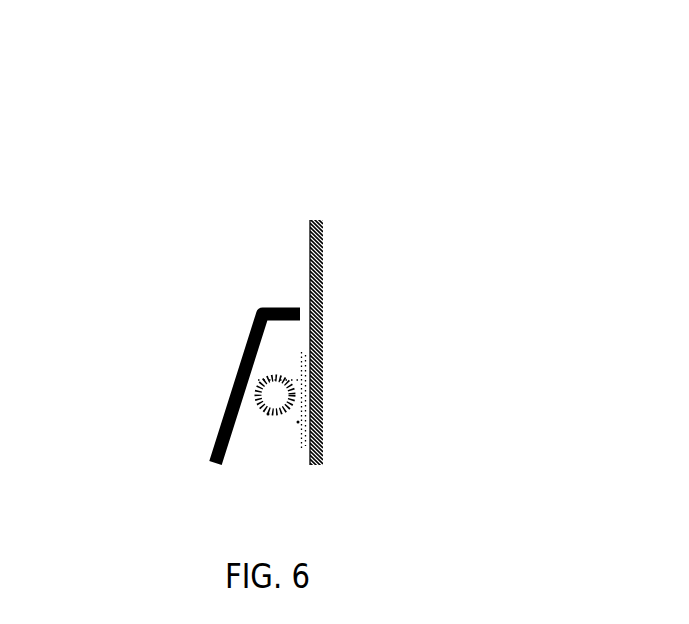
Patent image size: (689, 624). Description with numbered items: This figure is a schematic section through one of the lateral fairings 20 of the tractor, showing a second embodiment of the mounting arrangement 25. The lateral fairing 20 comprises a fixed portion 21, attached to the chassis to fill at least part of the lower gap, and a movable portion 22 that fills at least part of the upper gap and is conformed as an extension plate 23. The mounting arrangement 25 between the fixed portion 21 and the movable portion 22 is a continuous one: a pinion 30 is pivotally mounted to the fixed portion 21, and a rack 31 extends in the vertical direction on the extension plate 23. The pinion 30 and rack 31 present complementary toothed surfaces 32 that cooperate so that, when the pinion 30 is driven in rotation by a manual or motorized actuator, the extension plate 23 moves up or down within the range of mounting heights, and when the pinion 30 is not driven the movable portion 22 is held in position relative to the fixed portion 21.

The lateral fairing 20 is at (226, 248).
The fixed portion 21 is at (205, 414).
The movable portion 22 is at (329, 333).
The extension plate 23 is at (312, 237).
The mounting arrangement 25 is at (177, 287).
The pinion 30 is at (244, 386).
The rack 31 is at (291, 451).
The complementary toothed surfaces 32 is at (289, 433).